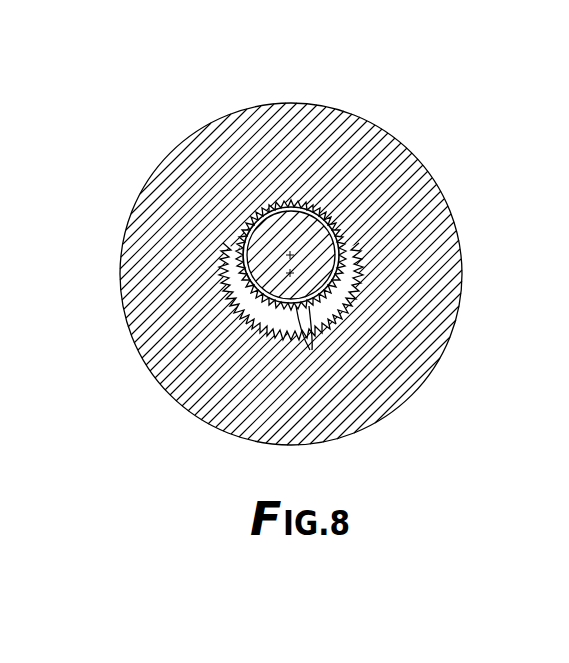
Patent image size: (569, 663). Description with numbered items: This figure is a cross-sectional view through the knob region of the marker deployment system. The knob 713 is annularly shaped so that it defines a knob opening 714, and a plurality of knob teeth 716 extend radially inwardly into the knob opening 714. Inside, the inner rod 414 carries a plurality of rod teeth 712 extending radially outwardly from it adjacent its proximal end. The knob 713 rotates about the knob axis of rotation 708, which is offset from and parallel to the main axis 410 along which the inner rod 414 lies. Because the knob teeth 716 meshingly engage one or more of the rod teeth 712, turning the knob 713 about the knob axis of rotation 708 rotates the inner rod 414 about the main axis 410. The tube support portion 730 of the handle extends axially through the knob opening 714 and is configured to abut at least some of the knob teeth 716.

The knob 713 is at (413, 140).
The main axis 410 is at (303, 250).
The inner rod 414 is at (315, 262).
The knob axis of rotation 708 is at (340, 300).
The tube support portion 730 is at (347, 312).
The rod teeth 712 is at (311, 350).
The knob teeth 716 is at (258, 322).
The knob opening 714 is at (257, 337).